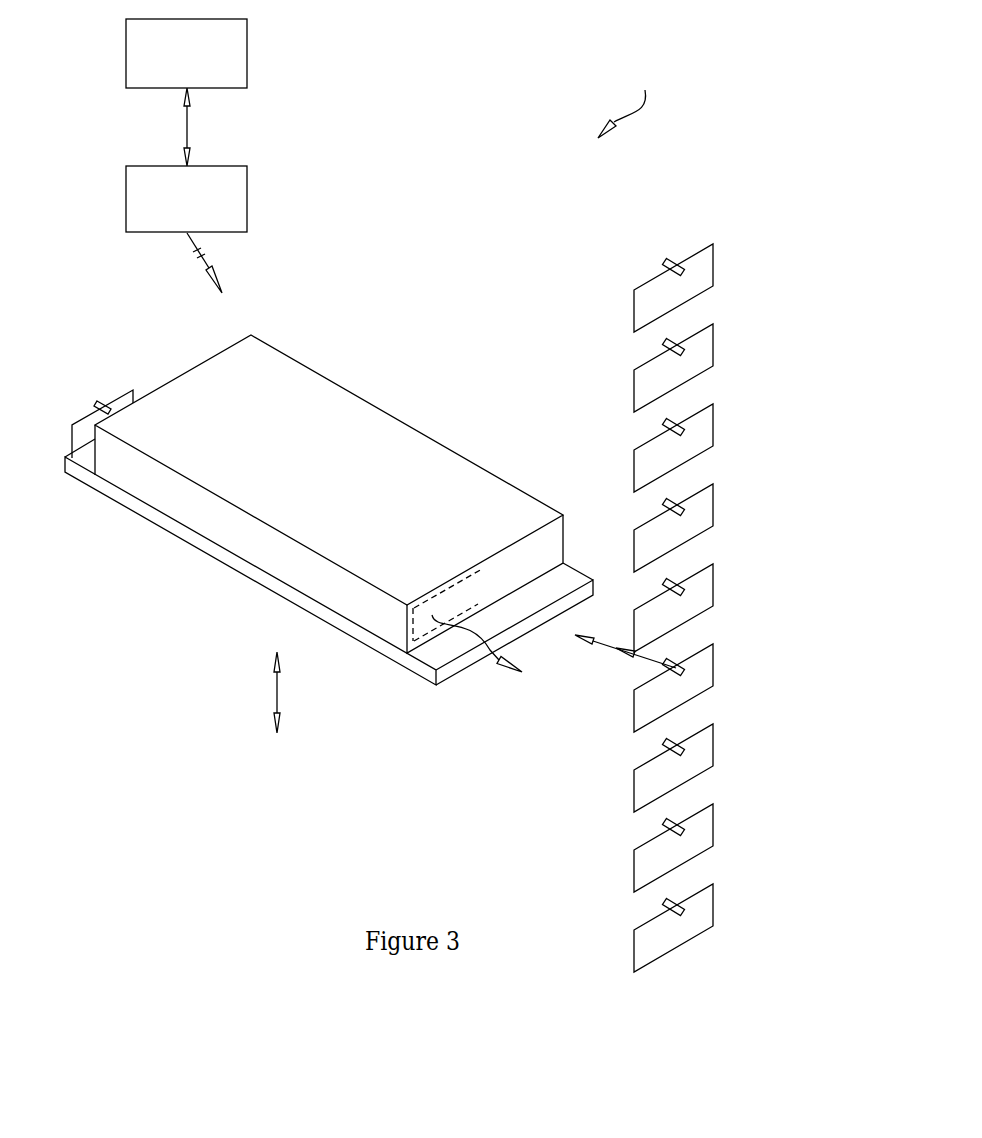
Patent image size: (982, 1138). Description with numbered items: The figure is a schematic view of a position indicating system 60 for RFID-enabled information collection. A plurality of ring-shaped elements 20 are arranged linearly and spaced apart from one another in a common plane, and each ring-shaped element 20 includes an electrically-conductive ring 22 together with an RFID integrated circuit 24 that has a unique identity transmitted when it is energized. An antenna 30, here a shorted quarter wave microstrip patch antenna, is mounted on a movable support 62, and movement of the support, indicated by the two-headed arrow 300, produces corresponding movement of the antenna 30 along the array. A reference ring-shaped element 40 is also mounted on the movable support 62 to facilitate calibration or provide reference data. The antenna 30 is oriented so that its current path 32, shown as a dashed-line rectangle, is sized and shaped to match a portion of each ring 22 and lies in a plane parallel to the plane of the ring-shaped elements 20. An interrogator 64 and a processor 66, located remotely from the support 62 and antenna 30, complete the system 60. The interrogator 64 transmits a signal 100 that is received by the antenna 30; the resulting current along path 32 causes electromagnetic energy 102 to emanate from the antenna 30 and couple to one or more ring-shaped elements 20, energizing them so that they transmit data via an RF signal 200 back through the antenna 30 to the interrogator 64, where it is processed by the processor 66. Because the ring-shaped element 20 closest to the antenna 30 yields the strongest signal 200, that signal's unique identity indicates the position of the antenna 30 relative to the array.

The ring-shaped element 20 is at (682, 594).
The electrically-conductive ring 22 is at (636, 311).
The RFID integrated circuit 24 is at (665, 263).
The antenna 30 is at (413, 427).
The current path 32 is at (412, 620).
The reference ring-shaped element 40 is at (110, 388).
The position indicating system 60 is at (630, 102).
The movable support 62 is at (125, 500).
The interrogator 64 is at (126, 192).
The processor 66 is at (126, 36).
The signal 100 is at (198, 254).
The electromagnetic energy 102 is at (492, 660).
The RF signal 200 is at (608, 645).
The movement 300 is at (277, 692).